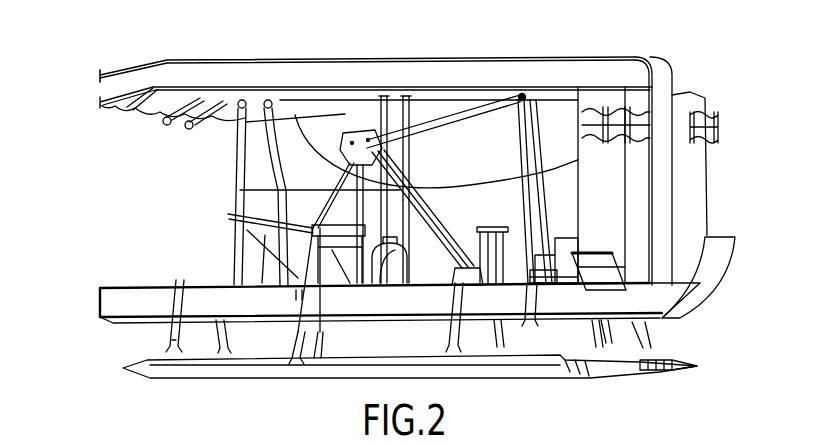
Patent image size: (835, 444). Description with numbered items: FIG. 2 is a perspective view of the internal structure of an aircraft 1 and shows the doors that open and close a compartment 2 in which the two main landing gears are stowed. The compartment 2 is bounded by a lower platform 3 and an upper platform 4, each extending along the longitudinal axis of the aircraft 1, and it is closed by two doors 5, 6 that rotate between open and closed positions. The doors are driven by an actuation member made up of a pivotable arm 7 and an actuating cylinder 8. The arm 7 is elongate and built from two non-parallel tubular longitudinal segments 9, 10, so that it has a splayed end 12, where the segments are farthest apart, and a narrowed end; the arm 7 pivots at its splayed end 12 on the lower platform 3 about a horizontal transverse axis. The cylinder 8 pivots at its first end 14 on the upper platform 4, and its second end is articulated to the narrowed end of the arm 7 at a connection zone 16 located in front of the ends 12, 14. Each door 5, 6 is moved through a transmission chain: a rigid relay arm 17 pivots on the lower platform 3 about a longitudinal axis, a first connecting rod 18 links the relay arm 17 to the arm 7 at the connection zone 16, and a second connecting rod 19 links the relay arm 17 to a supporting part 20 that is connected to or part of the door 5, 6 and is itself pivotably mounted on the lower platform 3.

The aircraft 1 is at (124, 207).
The compartment 2 is at (444, 158).
The lower platform 3 is at (347, 297).
The upper platform 4 is at (318, 66).
The door 5 is at (525, 365).
The door 6 is at (668, 359).
The pivotable arm 7 is at (555, 84).
The actuating cylinder 8 is at (430, 117).
The longitudinal segment 9 is at (445, 221).
The longitudinal segment 10 is at (474, 280).
The first, splayed end 12 is at (472, 284).
The first end 14 is at (522, 94).
The connection zone 16 is at (355, 134).
The relay arm 17 is at (255, 105).
The first connecting element 18 is at (303, 150).
The second connecting element 19 is at (303, 272).
The supporting part 20 is at (300, 336).